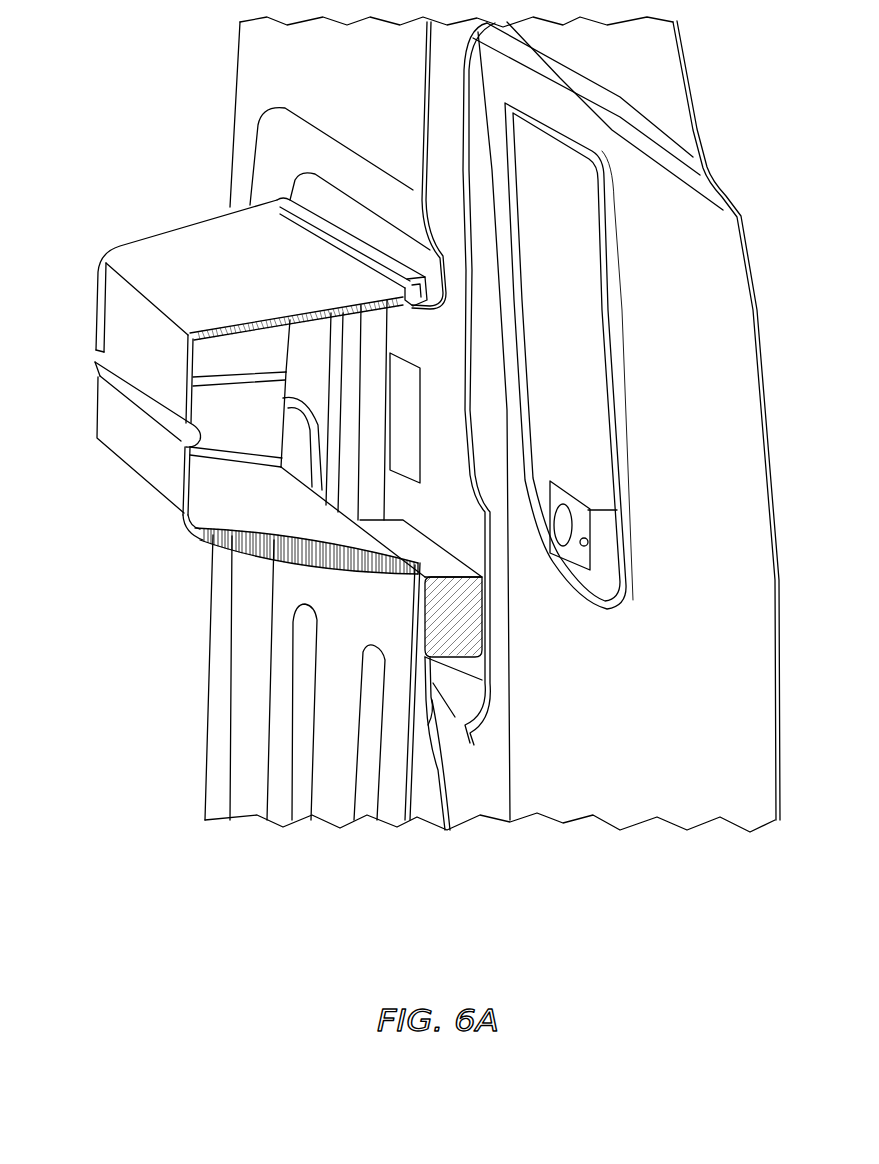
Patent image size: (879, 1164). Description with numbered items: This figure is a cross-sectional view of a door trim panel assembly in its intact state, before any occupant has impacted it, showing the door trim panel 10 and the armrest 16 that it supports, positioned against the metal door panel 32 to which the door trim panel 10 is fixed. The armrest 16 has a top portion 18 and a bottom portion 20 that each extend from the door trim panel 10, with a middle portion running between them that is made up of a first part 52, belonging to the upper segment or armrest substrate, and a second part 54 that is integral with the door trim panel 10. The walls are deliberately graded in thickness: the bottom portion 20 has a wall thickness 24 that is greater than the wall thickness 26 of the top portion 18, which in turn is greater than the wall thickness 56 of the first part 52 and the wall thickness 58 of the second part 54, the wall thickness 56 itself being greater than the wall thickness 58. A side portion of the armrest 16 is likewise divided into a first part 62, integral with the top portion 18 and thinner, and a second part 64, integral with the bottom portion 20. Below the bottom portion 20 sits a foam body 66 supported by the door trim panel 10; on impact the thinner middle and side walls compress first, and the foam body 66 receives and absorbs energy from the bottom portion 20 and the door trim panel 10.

The door trim panel 10 is at (365, 630).
The armrest 16 is at (88, 310).
The top portion 18 is at (236, 281).
The bottom portion 20 is at (252, 538).
The wall thickness 24 is at (292, 590).
The wall thickness 26 is at (320, 353).
The door panel 32 is at (431, 347).
The first part 52 is at (156, 351).
The second part 54 is at (154, 457).
The wall thickness 56 is at (228, 393).
The wall thickness 58 is at (228, 473).
The first part 62 is at (254, 370).
The second part 64 is at (249, 435).
The foam body 66 is at (452, 618).